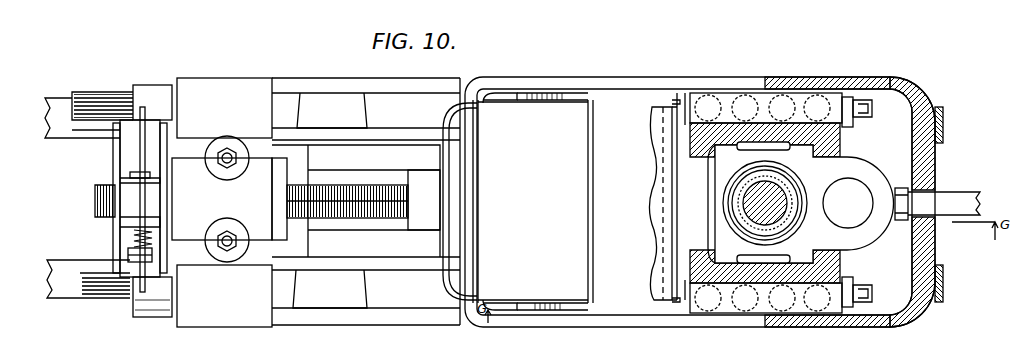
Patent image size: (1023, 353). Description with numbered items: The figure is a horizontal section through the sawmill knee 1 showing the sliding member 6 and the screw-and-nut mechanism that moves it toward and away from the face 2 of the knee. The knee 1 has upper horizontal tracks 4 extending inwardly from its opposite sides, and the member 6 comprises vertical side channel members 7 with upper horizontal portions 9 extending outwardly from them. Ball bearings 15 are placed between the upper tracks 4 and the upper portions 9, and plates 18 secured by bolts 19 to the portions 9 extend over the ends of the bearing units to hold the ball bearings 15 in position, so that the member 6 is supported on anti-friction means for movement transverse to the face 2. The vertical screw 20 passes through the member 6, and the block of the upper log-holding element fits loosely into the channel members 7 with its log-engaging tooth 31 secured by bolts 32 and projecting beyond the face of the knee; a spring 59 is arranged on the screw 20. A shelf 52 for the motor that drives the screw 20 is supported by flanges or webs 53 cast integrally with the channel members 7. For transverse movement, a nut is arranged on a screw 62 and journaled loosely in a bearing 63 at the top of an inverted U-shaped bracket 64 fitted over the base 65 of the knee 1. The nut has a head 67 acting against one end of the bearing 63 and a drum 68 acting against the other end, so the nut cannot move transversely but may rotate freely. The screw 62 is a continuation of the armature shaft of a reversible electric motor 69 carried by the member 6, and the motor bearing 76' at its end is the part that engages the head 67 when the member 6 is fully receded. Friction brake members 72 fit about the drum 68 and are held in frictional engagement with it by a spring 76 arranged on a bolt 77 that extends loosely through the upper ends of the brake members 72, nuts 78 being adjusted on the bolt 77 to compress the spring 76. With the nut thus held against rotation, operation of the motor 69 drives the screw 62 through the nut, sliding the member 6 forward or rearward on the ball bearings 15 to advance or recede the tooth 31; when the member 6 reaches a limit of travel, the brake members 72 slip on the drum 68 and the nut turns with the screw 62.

The knee 1 is at (918, 92).
The face 2 is at (944, 120).
The upper horizontal tracks 4 is at (543, 92).
The member 6 is at (662, 258).
The vertical side channel members 7 is at (828, 138).
The upper horizontal portions 9 is at (800, 88).
The ball bearings 15 is at (742, 100).
The plates 18 is at (690, 95).
The bolts 19 is at (676, 98).
The vertical screw 20 is at (782, 192).
The log-engaging portion or tooth 31 is at (950, 192).
The bolts 32 is at (902, 186).
The shelf 52 is at (660, 220).
The flanges or webs 53 is at (685, 140).
The spring 59 is at (790, 225).
The screw 62 is at (366, 182).
The bearing 63 is at (222, 199).
The inverted U-shaped bracket 64 is at (222, 86).
The base 65 is at (296, 86).
The head 67 is at (286, 177).
The drum 68 is at (112, 152).
The reversible electric motor 69 is at (457, 278).
The friction brake members 72 is at (148, 118).
The spring 76 is at (118, 240).
The piston 76' is at (533, 201).
The bolt 77 is at (146, 198).
The nuts 78 is at (152, 257).